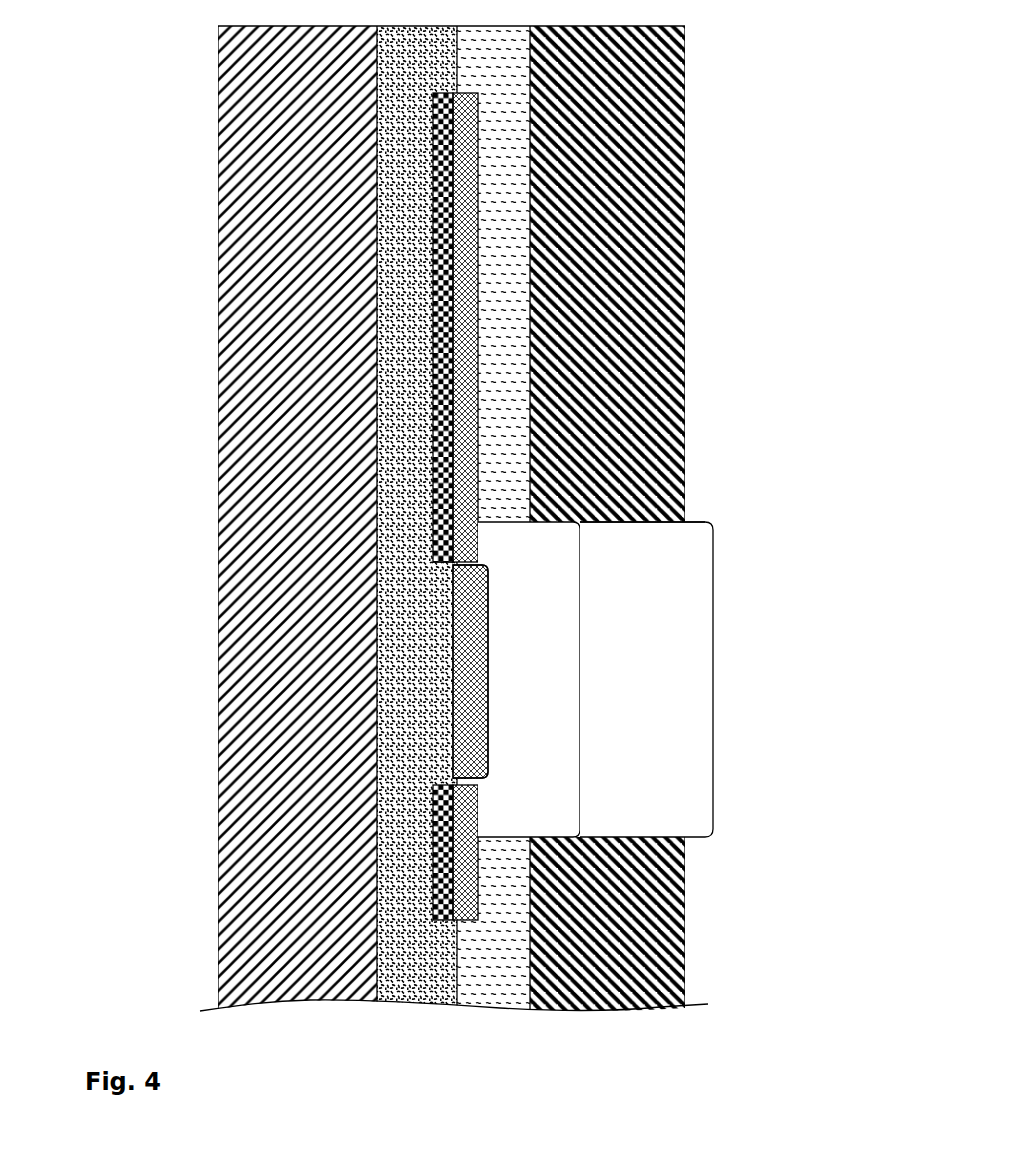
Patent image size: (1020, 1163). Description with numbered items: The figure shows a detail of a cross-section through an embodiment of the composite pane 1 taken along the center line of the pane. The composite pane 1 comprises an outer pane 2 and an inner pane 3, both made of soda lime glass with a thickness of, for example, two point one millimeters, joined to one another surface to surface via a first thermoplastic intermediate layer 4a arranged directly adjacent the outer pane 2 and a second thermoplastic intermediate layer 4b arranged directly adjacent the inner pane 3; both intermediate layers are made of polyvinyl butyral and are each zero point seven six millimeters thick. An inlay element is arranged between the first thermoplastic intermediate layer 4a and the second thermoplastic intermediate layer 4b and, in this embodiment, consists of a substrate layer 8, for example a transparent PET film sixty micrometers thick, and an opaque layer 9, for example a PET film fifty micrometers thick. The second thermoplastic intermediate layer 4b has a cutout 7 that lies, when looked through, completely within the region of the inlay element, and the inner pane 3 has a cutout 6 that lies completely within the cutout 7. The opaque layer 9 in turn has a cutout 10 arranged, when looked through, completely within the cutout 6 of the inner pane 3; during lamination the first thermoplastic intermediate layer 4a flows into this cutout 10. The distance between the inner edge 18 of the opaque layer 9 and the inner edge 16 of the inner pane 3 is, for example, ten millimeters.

The composite pane 1 is at (172, 75).
The outer pane 2 is at (243, 638).
The inner pane 3 is at (578, 165).
The first thermoplastic intermediate layer 4a is at (387, 577).
The second thermoplastic intermediate layer 4b is at (502, 367).
The cutout of the inner pane 6 is at (713, 673).
The cutout of the second thermoplastic intermediate layer 7 is at (580, 673).
The substrate layer 8 is at (466, 136).
The opaque layer 9 is at (432, 280).
The cutout of the opaque layer 10 is at (488, 664).
The inner edge of the inner pane 16 is at (605, 520).
The inner edge of the opaque layer 18 is at (433, 562).